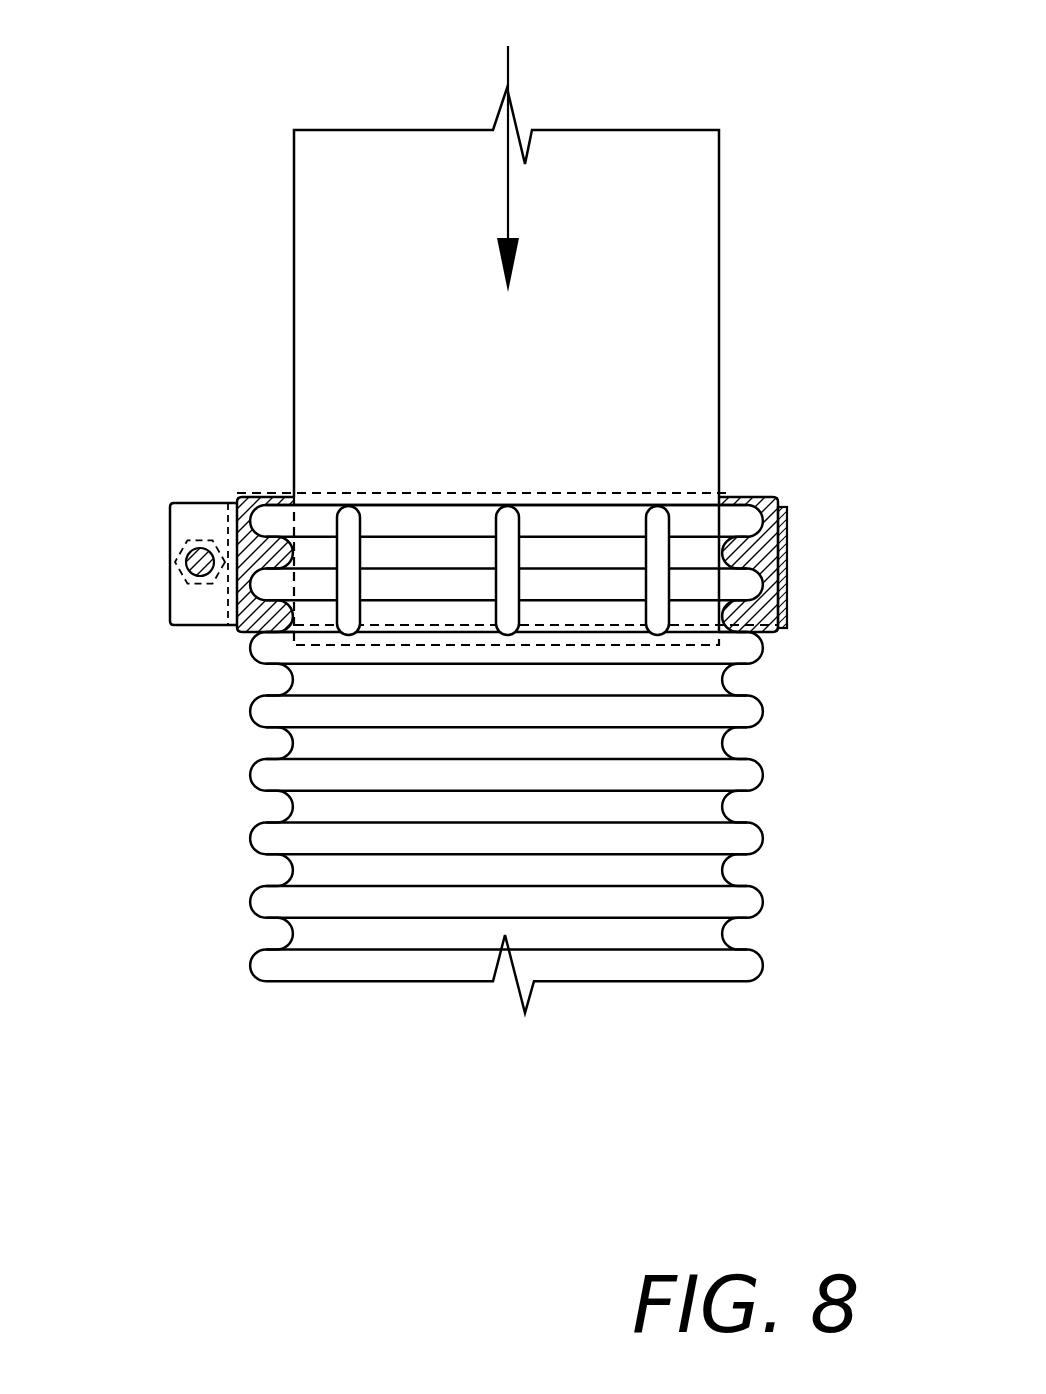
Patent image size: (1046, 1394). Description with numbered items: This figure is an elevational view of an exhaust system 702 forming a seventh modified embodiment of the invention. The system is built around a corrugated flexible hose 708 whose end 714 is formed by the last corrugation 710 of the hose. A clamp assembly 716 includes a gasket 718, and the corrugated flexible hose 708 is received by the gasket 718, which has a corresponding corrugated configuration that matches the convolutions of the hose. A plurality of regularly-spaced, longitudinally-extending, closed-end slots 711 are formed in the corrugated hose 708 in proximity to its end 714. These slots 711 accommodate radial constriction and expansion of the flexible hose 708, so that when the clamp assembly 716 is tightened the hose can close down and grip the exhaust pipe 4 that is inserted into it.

The exhaust system 702 is at (168, 192).
The exhaust pipe 4 is at (719, 130).
The flexible hose 708 is at (752, 982).
The gasket 718 is at (240, 497).
The clamp assembly 716 is at (800, 508).
The last corrugation 710 is at (680, 505).
The closed-end slots 711 is at (342, 507).
The end 714 is at (500, 507).